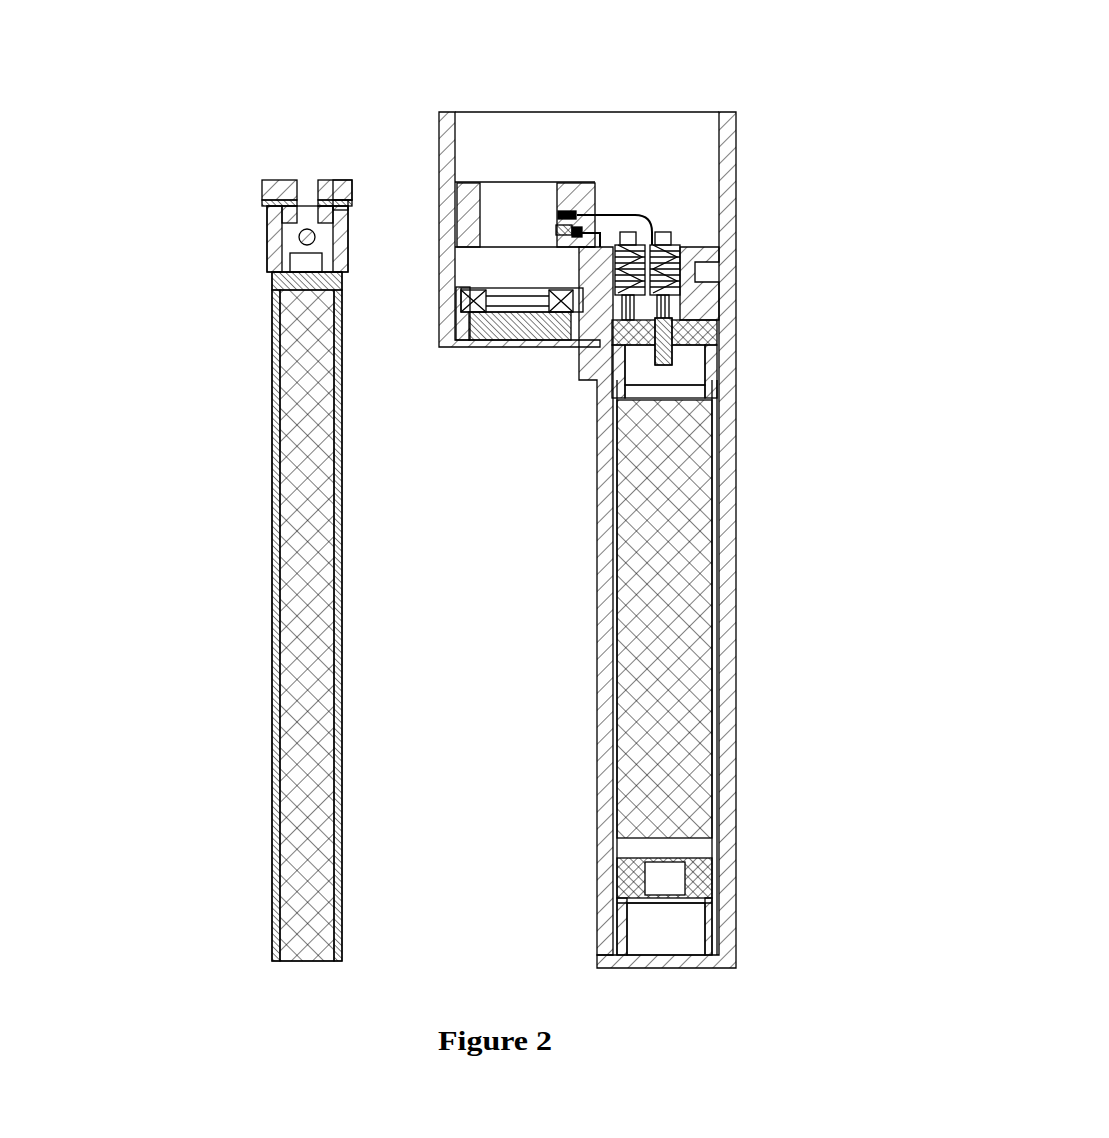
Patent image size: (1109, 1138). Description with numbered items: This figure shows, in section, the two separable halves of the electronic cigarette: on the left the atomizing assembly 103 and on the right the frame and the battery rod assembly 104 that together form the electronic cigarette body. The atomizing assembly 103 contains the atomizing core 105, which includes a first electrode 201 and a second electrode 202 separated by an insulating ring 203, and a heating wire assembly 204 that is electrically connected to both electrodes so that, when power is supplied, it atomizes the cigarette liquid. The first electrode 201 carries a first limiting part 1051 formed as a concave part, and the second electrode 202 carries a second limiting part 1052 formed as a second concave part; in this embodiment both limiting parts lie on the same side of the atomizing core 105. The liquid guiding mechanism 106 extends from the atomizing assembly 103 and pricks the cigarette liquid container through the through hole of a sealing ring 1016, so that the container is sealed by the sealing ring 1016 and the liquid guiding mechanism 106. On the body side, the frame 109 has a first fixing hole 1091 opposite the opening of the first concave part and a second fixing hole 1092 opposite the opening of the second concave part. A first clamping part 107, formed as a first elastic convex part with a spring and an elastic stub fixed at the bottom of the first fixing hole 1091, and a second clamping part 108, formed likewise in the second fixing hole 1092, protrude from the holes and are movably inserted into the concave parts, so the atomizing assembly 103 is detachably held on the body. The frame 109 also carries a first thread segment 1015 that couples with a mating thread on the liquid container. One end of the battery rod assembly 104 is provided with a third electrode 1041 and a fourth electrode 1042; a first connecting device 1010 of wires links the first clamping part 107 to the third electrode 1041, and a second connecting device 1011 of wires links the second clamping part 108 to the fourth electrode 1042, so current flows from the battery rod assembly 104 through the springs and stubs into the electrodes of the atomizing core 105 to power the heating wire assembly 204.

The atomizing assembly 103 is at (255, 297).
The liquid guiding mechanism 106 is at (298, 644).
The atomizing core 105 is at (285, 225).
The second electrode 202 is at (263, 233).
The first electrode 201 is at (273, 190).
The insulating ring 203 is at (265, 200).
The first limiting part 1051 is at (348, 190).
The second limiting part 1052 is at (348, 205).
The heating wire assembly 204 is at (312, 238).
The first clamping part 107 is at (559, 220).
The first fixing hole 1091 is at (565, 218).
The second clamping part 108 is at (562, 228).
The second fixing hole 1092 is at (570, 232).
The first connecting device 1010 is at (577, 215).
The second connecting device 1011 is at (597, 233).
The sealing ring 1016 is at (563, 307).
The first thread segment 1015 is at (578, 323).
The frame 109 is at (592, 323).
The third electrode 1041 is at (672, 323).
The fourth electrode 1042 is at (703, 337).
The battery rod assembly 104 is at (641, 782).